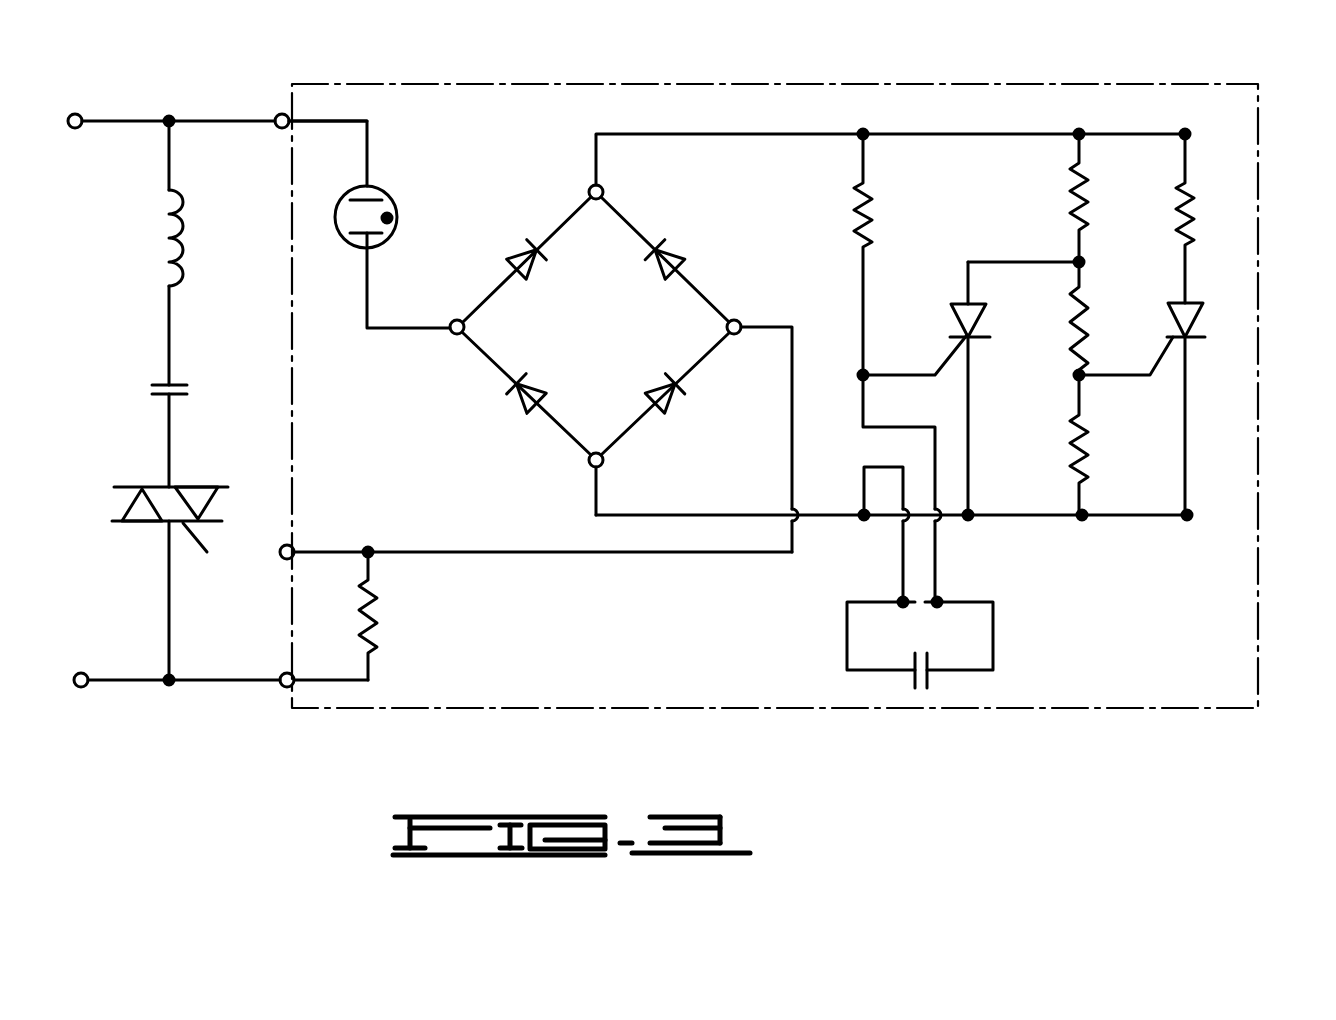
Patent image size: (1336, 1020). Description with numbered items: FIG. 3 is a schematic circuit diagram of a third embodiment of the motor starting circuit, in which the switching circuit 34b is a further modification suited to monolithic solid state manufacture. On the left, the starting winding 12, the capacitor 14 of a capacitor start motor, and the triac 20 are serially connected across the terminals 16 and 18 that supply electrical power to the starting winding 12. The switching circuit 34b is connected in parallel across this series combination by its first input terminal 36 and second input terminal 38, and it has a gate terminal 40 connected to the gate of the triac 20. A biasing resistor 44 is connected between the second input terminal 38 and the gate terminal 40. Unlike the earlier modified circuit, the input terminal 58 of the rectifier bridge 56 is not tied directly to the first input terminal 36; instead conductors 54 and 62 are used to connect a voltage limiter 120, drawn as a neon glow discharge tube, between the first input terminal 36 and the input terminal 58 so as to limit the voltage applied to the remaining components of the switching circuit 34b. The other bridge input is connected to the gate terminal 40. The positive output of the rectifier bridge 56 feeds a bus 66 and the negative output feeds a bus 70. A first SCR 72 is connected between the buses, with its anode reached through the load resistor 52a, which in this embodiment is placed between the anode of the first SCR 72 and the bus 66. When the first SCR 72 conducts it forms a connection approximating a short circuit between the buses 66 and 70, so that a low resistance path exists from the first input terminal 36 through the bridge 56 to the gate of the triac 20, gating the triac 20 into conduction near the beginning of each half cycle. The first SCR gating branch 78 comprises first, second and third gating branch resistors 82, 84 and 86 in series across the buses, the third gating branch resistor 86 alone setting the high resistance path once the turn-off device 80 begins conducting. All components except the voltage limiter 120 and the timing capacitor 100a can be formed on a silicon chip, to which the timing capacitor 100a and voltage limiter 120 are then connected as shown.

The starting winding 12 is at (181, 226).
The capacitor 14 is at (180, 383).
The terminal 16 is at (78, 688).
The terminal 18 is at (80, 112).
The triac 20 is at (200, 485).
The switching circuit 34b is at (892, 72).
The first input terminal 36 is at (280, 112).
The second input terminal 38 is at (284, 690).
The gate terminal 40 is at (288, 543).
The biasing resistor 44 is at (380, 608).
The load resistor 52a is at (1195, 212).
The conductor 54 is at (372, 135).
The rectifier bridge 56 is at (478, 372).
The input terminal 58 is at (446, 338).
The conductor 62 is at (375, 292).
The bus 66 is at (975, 133).
The bus 70 is at (955, 517).
The first SCR 72 is at (1200, 322).
The first SCR gating branch 78 is at (872, 212).
The turn-off device 80 is at (985, 312).
The first gating branch resistor 82 is at (1090, 445).
The second gating branch resistor 84 is at (1090, 310).
The third gating branch resistor 86 is at (1090, 190).
The timing capacitor 100a is at (912, 680).
The voltage limiter 120 is at (395, 203).